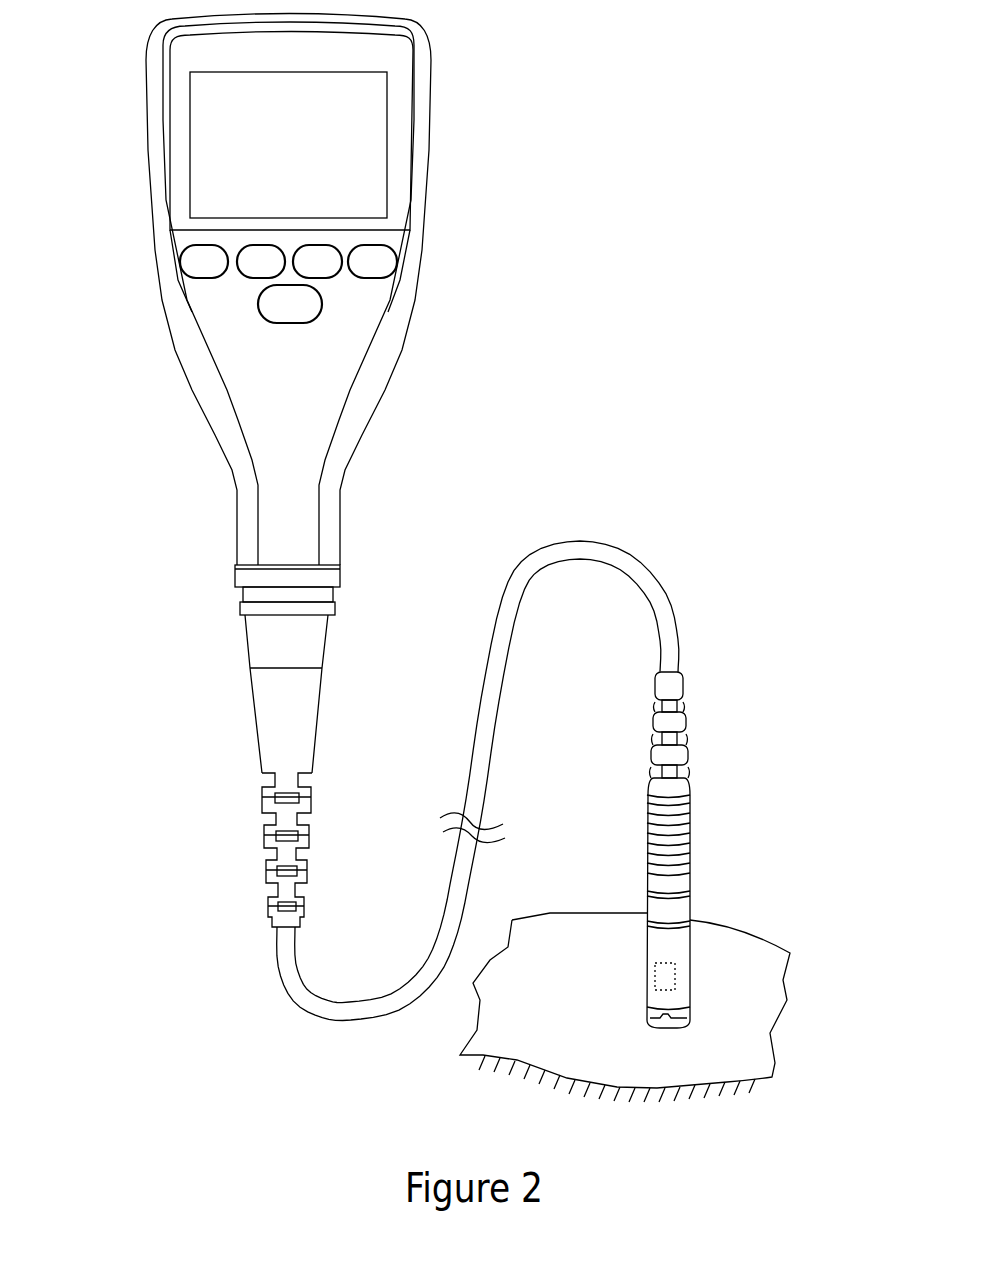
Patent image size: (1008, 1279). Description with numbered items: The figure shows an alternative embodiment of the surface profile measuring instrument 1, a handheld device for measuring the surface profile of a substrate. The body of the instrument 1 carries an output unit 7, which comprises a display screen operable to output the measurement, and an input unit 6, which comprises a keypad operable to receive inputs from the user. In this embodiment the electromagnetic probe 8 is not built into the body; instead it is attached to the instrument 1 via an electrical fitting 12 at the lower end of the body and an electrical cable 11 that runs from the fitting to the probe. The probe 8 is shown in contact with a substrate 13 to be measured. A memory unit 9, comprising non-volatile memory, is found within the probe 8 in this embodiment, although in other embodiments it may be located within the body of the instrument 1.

The surface profile measuring instrument 1 is at (150, 72).
The input unit 6 is at (337, 298).
The output unit 7 is at (288, 145).
The electromagnetic probe 8 is at (692, 940).
The memory unit 9 is at (668, 972).
The electrical cable 11 is at (608, 543).
The electrical fitting 12 is at (237, 588).
The substrate 13 is at (547, 1052).